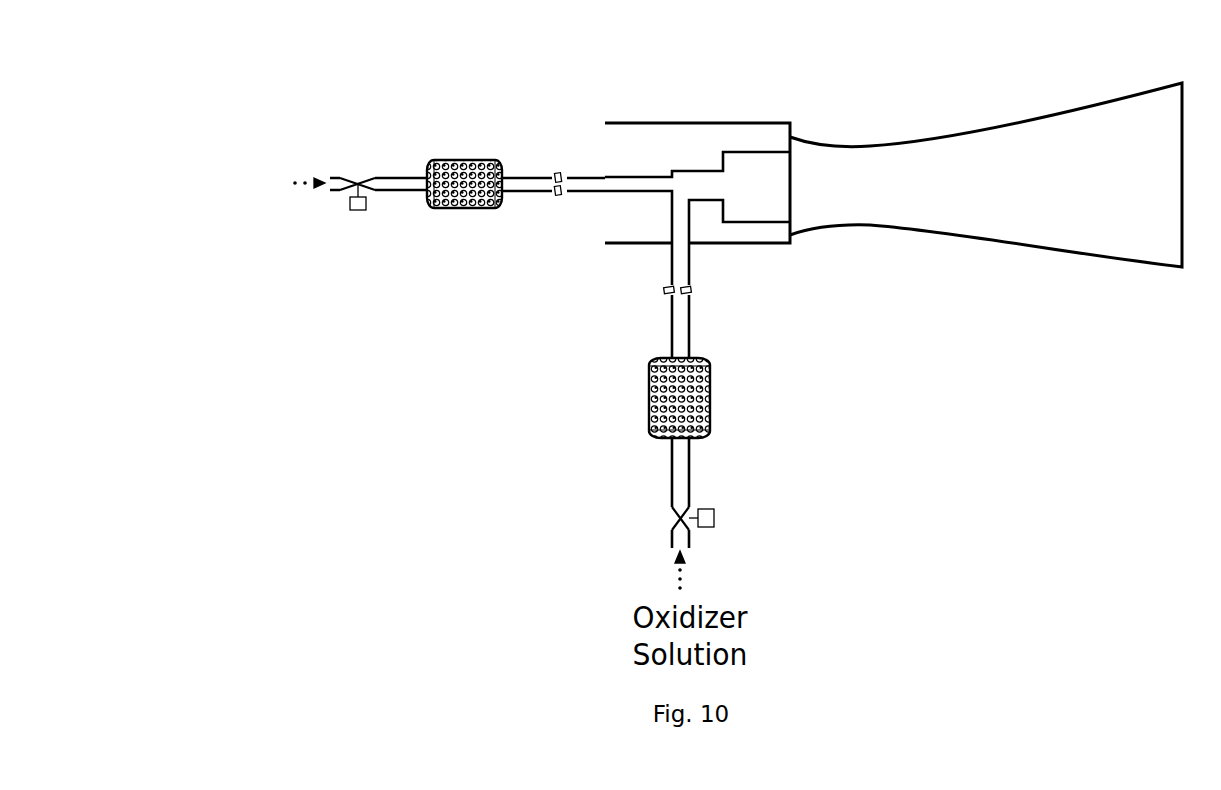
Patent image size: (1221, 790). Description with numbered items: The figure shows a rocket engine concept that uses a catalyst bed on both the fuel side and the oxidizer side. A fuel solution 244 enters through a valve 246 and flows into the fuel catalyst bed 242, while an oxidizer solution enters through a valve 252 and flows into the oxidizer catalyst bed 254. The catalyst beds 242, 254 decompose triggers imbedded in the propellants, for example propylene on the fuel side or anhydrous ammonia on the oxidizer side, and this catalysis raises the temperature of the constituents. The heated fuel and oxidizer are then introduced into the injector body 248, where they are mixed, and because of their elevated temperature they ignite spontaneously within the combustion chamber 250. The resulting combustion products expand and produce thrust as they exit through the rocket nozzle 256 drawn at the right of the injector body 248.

The fuel catalyst bed 242 is at (475, 114).
The fuel solution 244 is at (244, 208).
The fuel valve 246 is at (363, 218).
The injector body 248 is at (697, 161).
The combustion chamber 250 is at (762, 200).
The oxidizer valve 252 is at (734, 526).
The oxidizer catalyst bed 254 is at (658, 393).
The rocket nozzle 256 is at (986, 160).